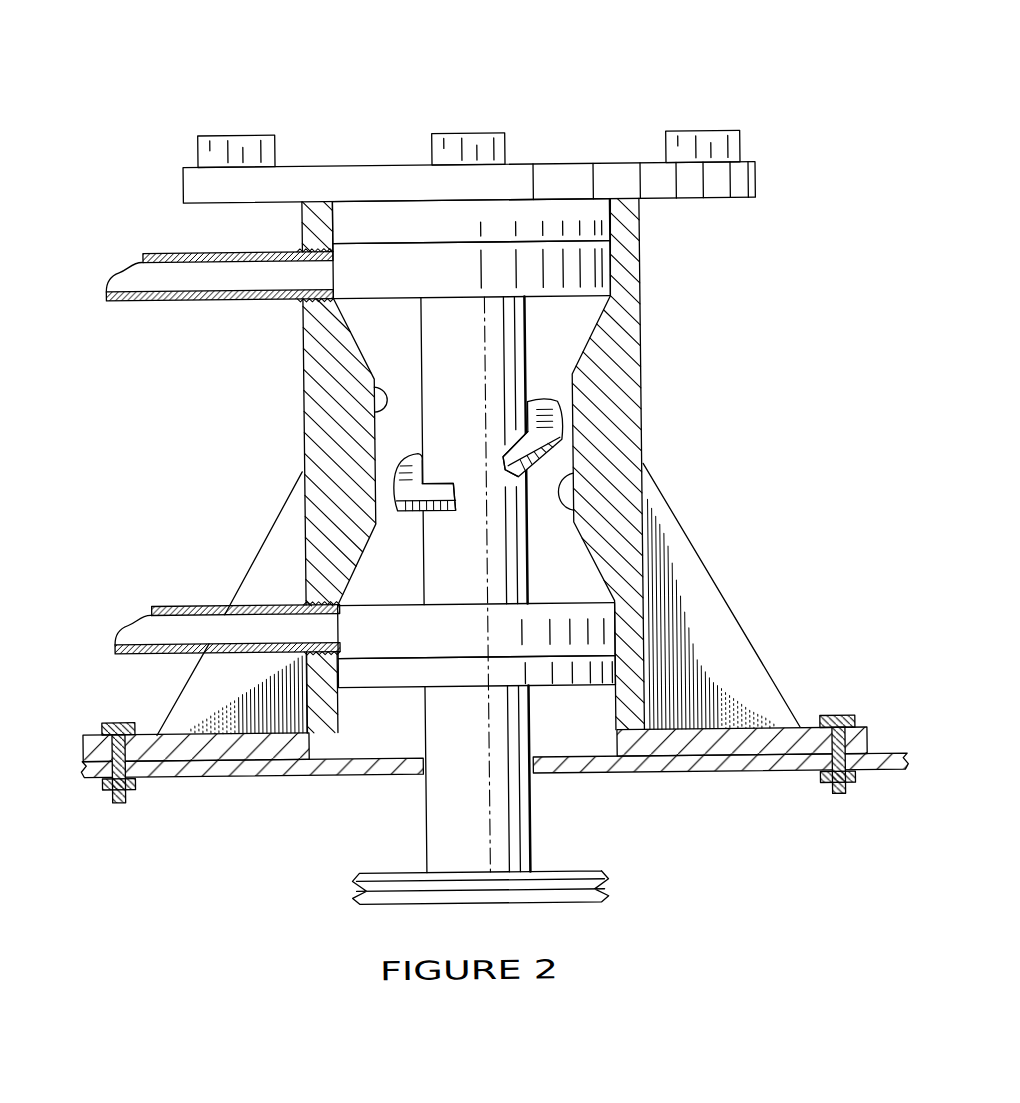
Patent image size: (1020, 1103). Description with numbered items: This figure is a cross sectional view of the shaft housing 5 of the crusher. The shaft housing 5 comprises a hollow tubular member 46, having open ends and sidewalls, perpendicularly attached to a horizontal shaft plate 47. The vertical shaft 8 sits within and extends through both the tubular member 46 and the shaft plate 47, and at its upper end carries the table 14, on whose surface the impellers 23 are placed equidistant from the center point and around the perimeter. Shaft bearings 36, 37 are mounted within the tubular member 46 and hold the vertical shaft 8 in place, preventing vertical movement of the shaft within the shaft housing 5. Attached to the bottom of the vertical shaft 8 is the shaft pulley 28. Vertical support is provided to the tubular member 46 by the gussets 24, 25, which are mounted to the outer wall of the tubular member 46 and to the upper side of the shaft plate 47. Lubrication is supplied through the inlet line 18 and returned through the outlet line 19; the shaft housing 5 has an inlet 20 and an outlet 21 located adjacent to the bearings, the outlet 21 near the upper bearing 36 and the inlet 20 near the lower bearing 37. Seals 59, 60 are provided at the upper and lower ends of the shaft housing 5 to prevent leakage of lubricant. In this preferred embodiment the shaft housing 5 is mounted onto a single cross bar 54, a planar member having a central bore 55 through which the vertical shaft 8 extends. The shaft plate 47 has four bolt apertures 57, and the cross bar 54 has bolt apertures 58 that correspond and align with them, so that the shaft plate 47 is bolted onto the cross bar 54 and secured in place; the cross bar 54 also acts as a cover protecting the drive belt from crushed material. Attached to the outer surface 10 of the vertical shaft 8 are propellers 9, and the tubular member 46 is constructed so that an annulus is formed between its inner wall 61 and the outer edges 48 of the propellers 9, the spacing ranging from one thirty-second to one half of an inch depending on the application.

The shaft housing 5 is at (302, 397).
The vertical shaft 8 is at (519, 843).
The propellers 9 is at (560, 438).
The outer surface 10 is at (483, 383).
The table 14 is at (761, 185).
The inlet line 18 is at (175, 603).
The outlet line 19 is at (117, 296).
The inlet 20 is at (316, 623).
The outlet 21 is at (324, 271).
The impellers 23 is at (671, 132).
The gusset 24 is at (723, 634).
The gusset 25 is at (222, 690).
The shaft pulley 28 is at (597, 898).
The upper shaft bearing 36 is at (599, 268).
The lower shaft bearing 37 is at (606, 616).
The tubular member 46 is at (629, 582).
The shaft plate 47 is at (870, 741).
The outer edges 48 is at (563, 419).
The cross bar 54 is at (685, 775).
The central bore 55 is at (535, 769).
The bolt apertures 57 is at (844, 749).
The bolt apertures 58 is at (825, 770).
The upper seal 59 is at (600, 223).
The lower seal 60 is at (361, 669).
The inner wall 61 is at (572, 476).